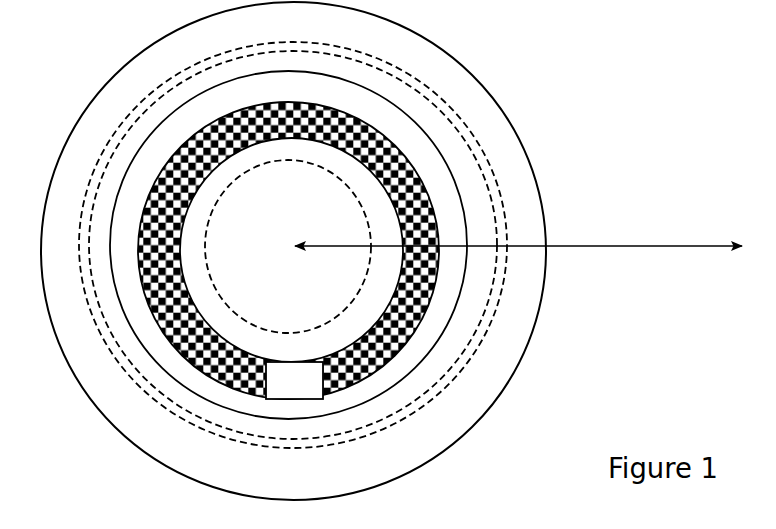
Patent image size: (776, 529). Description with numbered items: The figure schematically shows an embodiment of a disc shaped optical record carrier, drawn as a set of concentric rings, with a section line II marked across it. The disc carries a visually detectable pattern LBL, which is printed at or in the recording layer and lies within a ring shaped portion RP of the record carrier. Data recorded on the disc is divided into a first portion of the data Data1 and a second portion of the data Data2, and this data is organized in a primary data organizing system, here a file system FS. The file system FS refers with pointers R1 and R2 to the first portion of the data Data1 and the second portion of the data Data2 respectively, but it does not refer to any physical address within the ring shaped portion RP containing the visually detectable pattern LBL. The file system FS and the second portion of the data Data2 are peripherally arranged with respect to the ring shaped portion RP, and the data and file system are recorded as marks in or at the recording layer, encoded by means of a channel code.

The pointer R1 is at (422, 129).
The pointer R2 is at (372, 58).
The file system FS is at (450, 168).
The ring shaped portion RP is at (420, 235).
The section line II- II is at (518, 272).
The first portion of the data Data1 is at (343, 317).
The second portion of the data Data2 is at (498, 315).
The visually detectable pattern LBL is at (294, 380).